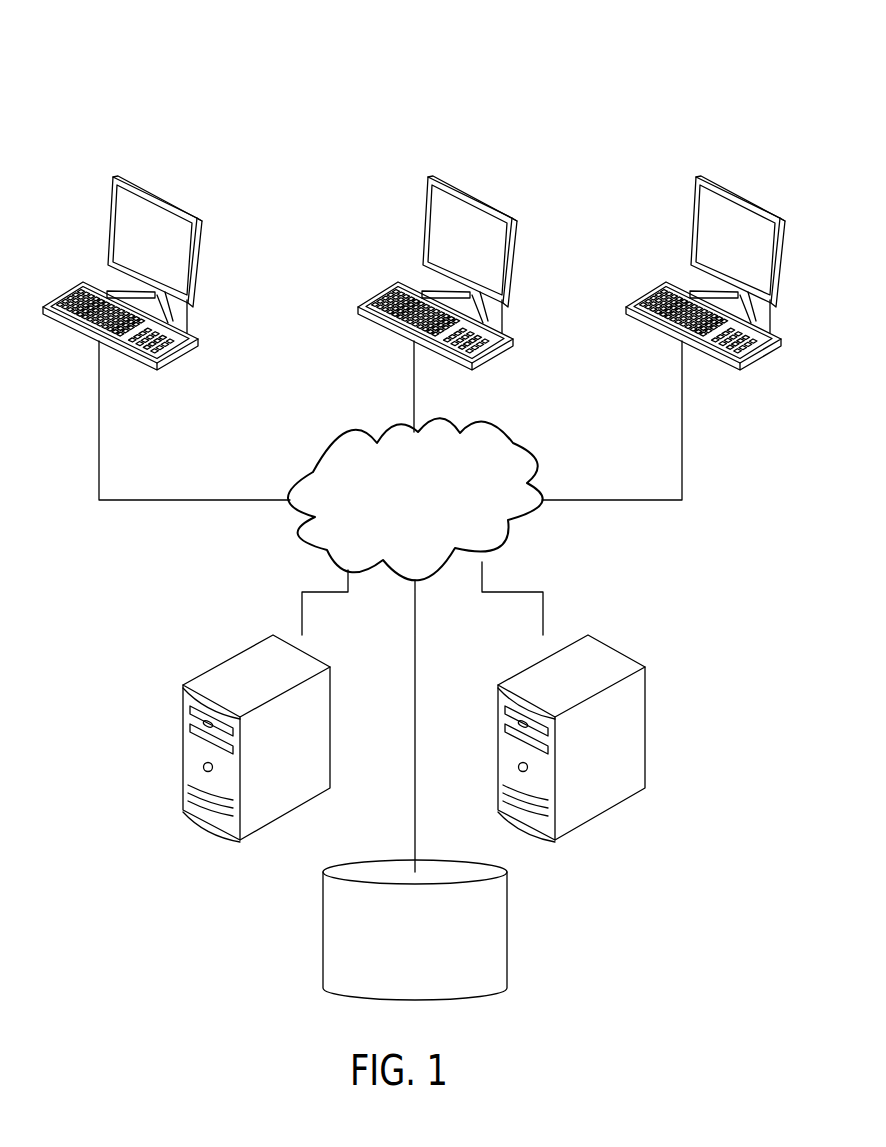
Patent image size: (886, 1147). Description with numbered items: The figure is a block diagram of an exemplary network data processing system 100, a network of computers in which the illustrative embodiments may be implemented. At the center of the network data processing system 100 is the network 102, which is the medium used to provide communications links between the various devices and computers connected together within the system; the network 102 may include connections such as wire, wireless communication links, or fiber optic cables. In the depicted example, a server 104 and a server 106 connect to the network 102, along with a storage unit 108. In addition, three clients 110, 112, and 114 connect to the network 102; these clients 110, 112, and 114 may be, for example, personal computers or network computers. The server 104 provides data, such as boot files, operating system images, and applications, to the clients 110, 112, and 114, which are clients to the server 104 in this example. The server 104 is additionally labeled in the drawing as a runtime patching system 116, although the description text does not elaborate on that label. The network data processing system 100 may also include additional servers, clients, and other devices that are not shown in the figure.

The network data processing system 100 is at (82, 98).
The network 102 is at (537, 462).
The server 104 is at (647, 733).
The server 106 is at (332, 733).
The storage unit 108 is at (508, 928).
The client 110 is at (162, 198).
The client 112 is at (477, 198).
The client 114 is at (745, 198).
The runtime patching system 116 is at (688, 837).